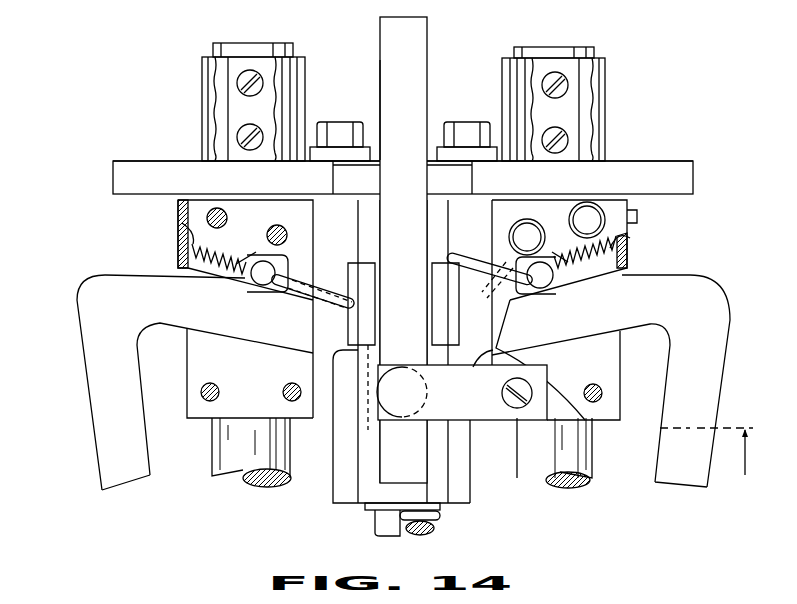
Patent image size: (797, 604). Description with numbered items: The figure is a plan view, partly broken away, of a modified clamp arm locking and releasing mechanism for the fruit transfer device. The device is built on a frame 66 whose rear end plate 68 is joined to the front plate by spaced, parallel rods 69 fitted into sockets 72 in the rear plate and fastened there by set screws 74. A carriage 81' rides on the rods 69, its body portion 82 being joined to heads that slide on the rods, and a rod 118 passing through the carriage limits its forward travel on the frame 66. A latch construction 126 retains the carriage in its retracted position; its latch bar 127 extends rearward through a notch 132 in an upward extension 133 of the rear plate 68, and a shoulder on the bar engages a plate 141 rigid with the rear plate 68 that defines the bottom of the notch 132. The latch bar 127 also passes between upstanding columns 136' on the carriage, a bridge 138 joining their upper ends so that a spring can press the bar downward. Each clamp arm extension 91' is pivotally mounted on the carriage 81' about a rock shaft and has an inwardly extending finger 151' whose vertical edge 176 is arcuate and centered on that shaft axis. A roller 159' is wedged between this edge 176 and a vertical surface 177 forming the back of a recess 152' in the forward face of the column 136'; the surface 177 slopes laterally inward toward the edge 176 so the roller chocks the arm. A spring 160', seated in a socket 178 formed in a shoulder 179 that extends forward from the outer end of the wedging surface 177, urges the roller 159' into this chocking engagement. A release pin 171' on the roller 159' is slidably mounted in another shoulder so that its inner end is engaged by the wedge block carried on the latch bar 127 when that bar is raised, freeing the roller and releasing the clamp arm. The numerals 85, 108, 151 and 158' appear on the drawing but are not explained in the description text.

The frame 66 is at (672, 164).
The rear end plate 68 is at (690, 178).
The rods 69 is at (248, 47).
The sockets 72 is at (215, 133).
The set screws 74 is at (242, 133).
The carriage 81' is at (374, 363).
The body portion 82 is at (460, 495).
The direction arrow 85 is at (100, 437).
The clamp arm extension 91' is at (404, 405).
The clamp arm body 108 is at (84, 390).
The rod 118 is at (424, 532).
The latch construction 126 is at (380, 42).
The latch bar 127 is at (380, 64).
The notch 132 is at (376, 180).
The upward extension 133 is at (460, 177).
The column 136' is at (408, 413).
The bridge 138 is at (482, 400).
The plate 141 is at (325, 152).
The right housing block 151 is at (597, 357).
The finger 151' is at (245, 309).
The recess 152' is at (564, 310).
The rod 158' is at (400, 266).
The roller 159' is at (409, 285).
The spring 160' is at (406, 239).
The release pin 171' is at (401, 291).
The vertical edge 176 is at (172, 272).
The vertical surface 177 is at (262, 250).
The socket 178 is at (70, 275).
The shoulder 179 is at (200, 270).